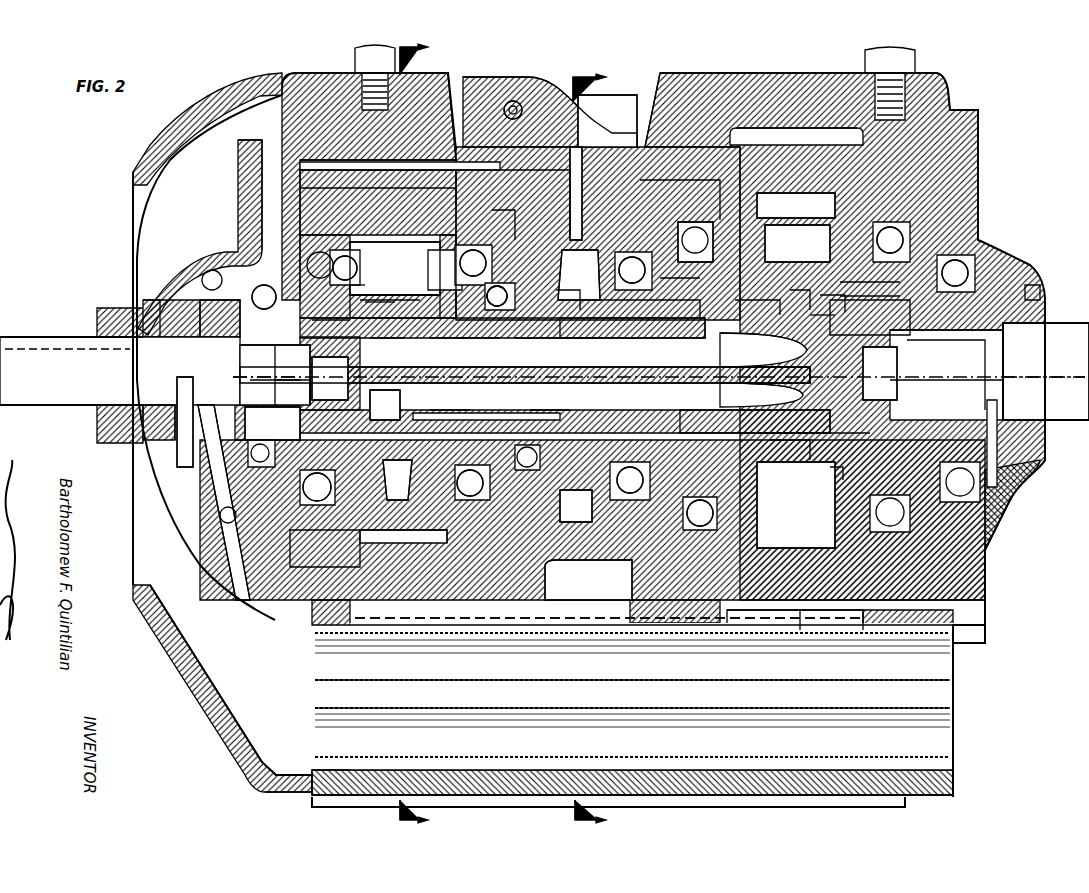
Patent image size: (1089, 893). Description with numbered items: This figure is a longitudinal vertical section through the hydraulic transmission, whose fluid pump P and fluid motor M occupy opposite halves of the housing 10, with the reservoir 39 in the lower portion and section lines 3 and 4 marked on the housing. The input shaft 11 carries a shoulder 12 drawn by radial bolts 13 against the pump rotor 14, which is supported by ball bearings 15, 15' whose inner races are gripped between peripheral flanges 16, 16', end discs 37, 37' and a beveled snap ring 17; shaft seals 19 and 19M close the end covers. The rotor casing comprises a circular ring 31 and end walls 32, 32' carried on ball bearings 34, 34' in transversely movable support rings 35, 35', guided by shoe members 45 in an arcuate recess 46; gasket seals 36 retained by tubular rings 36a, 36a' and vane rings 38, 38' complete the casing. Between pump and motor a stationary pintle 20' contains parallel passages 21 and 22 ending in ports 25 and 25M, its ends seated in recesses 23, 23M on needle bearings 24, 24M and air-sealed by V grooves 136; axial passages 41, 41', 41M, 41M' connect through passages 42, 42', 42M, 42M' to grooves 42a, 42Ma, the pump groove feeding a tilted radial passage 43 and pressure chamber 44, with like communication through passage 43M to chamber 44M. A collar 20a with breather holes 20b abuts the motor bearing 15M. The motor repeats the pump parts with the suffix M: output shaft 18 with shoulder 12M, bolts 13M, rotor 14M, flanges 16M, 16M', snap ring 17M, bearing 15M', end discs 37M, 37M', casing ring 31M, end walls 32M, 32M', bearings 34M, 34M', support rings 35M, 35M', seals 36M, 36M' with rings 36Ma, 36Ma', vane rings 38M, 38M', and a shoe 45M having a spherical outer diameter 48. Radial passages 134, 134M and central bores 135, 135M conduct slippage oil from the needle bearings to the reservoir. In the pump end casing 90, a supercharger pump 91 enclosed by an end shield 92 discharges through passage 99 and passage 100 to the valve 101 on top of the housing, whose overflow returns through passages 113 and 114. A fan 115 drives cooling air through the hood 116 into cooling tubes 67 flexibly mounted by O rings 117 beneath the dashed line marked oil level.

The fluid pump P is at (318, 73).
The fluid motor M is at (768, 85).
The section line 3 is at (417, 431).
The section line 4 is at (560, 441).
The valve 101 is at (503, 88).
The spherical outer diameter 48 is at (820, 145).
The passage 99 is at (268, 168).
The passage 100 is at (342, 162).
The shoe member 45 is at (408, 182).
The fan 115 is at (163, 228).
The passage 113 is at (583, 172).
The ball bearing 34M is at (697, 209).
The ball bearing 34 is at (313, 233).
The vane rotor casing support ring 35 is at (378, 195).
The ball bearing 34' is at (472, 230).
The vane rotor casing support ring 35' is at (513, 202).
The vane rotor casing support ring 35M is at (671, 200).
The casing end wall 32M' is at (799, 202).
The ball bearing 34M' is at (893, 218).
The vane rotor casing support ring 35M' is at (973, 175).
The ball bearing 15 is at (264, 282).
The end disc 37 is at (320, 265).
The casing end wall 32 is at (395, 268).
The casing end wall 32' is at (438, 276).
The arcuate recess 46 is at (500, 226).
The ball bearing 15' is at (526, 267).
The ball bearing 15M is at (639, 247).
The casing end wall 32M is at (787, 243).
The ball bearing 15M' is at (965, 250).
The tubular ring 36a is at (362, 282).
The vane ring 38 is at (395, 281).
The circumferential groove 42a is at (390, 299).
The gasket seal 36 is at (370, 301).
The end disc 37' is at (512, 284).
The breather holes 20b is at (579, 386).
The end disc 37M is at (634, 270).
The tubular ring 36Ma is at (703, 276).
The gasket seal 36M' is at (870, 276).
The tubular ring 36Ma' is at (870, 293).
The end disc 37M' is at (958, 273).
The shaft seal 19M is at (1032, 296).
The shaft seal 19 is at (140, 337).
The peripheral flange or shoulder 12 is at (233, 342).
The radially disposed bolts 13 is at (257, 375).
The external peripheral flange 16 is at (292, 375).
The tilted radial passage 43 is at (331, 320).
The vane ring 38' is at (395, 319).
The passage 42 is at (389, 342).
The axial passage 41 is at (445, 351).
The peripheral V groove 136 is at (610, 374).
The tubular ring 36a' is at (536, 348).
The circular flange or collar 20a is at (565, 374).
The passage 21 is at (525, 362).
The wedge-type beveled snap ring 17 is at (573, 300).
The snap ring 17M is at (650, 307).
The external peripheral flange 16M is at (632, 328).
The gasket seal 36M is at (757, 307).
The vane rotor 14M is at (801, 300).
The tilted radial passage 43M is at (834, 302).
The passage 42M is at (805, 320).
The recess 23M is at (870, 317).
The radially disposed bolts 13M is at (946, 345).
The output shaft 18 is at (1068, 343).
The peripheral flange or shoulder 12M is at (1046, 341).
The input shaft 11 is at (95, 385).
The radial passage 134 is at (250, 388).
The pump rotor 14 is at (275, 391).
The needle bearing 24 is at (292, 392).
The pressure chamber 44 is at (330, 378).
The central bore 135 is at (272, 423).
The passage 42' is at (392, 405).
The axial passage 41' is at (450, 396).
The external peripheral flange 16' is at (488, 442).
The passage 22 is at (592, 430).
The pressure chamber 44M is at (700, 432).
The hollow shaft end 20' is at (765, 382).
The axial passage 41M is at (767, 345).
The axial passage 41M' is at (779, 382).
The needle bearing 24M is at (880, 373).
The external peripheral flange 16M' is at (946, 375).
The central bore 135M is at (946, 400).
The radial passage 134M is at (1044, 390).
The port 25M is at (790, 440).
The passage 42M' is at (790, 432).
The circumferential groove 42Ma is at (845, 432).
The end shield 92 is at (150, 442).
The supercharger pump 91 is at (180, 455).
The pump end casing 90 is at (222, 515).
The recess 23 is at (321, 476).
The port 25 is at (397, 480).
The vane ring 38M is at (796, 505).
The vane ring 38M' is at (818, 498).
The circular ring 31 is at (400, 545).
The passage 114 is at (588, 580).
The cooling tubes 67 is at (705, 640).
The shoe member 45M is at (763, 620).
The circular ring 31M is at (831, 620).
The hood 116 is at (245, 762).
The neoprene rubber O rings 117 is at (380, 708).
The housing 10 is at (320, 790).
The reservoir 39 is at (712, 788).
The oil level oil is at (607, 606).